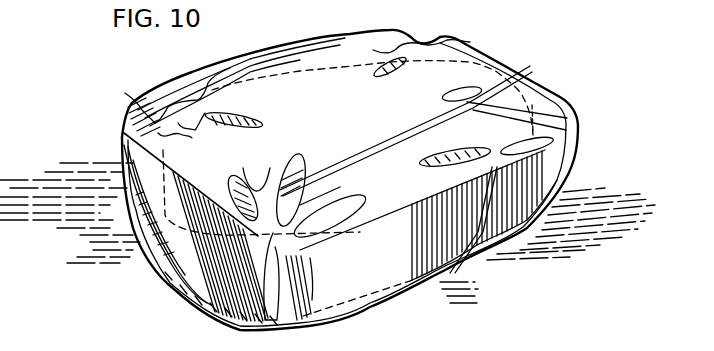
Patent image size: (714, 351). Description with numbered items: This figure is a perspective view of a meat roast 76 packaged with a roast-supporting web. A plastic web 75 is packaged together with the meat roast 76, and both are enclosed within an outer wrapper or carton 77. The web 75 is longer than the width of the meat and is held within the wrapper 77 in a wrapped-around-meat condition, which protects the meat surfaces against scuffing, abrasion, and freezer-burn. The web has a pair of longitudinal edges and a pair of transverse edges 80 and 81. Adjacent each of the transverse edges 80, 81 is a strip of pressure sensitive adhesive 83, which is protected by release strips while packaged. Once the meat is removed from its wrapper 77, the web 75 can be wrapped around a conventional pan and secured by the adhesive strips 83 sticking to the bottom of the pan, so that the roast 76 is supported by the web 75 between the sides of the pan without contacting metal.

The plastic web 75 is at (124, 140).
The meat roast 76 is at (458, 272).
The outer wrapper or carton 77 is at (563, 170).
The transverse edge 80 is at (138, 110).
The transverse edge 81 is at (124, 118).
The strip of pressure sensitive adhesive 83 is at (122, 137).